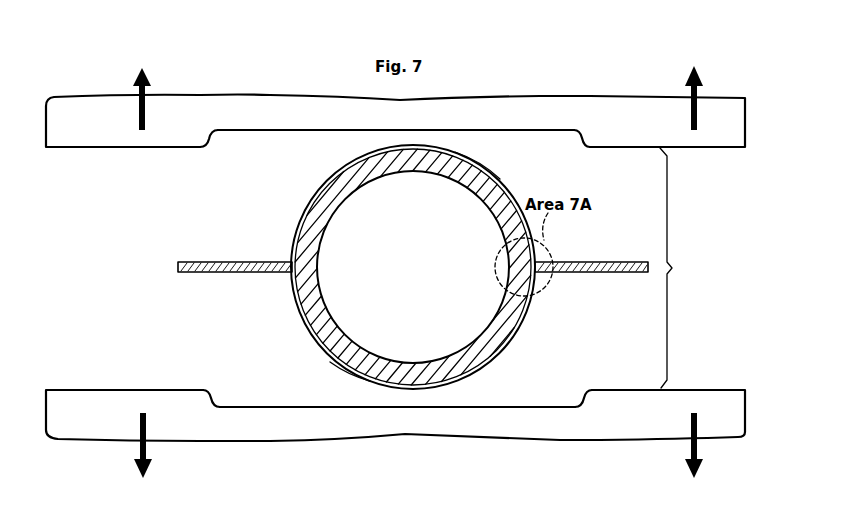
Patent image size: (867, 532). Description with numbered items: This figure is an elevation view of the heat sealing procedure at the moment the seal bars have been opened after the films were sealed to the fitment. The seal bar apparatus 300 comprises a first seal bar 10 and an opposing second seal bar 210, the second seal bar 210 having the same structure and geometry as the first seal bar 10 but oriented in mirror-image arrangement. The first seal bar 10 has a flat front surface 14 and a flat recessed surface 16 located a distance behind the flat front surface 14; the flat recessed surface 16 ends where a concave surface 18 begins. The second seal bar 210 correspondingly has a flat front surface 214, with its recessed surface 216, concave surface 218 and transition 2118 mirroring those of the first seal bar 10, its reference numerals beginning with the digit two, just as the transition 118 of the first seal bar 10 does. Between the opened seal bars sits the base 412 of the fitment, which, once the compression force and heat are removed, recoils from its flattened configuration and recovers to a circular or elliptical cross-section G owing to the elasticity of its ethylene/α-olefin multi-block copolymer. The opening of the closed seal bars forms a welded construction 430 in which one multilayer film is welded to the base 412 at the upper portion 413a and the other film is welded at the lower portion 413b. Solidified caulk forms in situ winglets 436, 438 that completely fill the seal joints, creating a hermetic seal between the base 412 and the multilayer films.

The first seal bar 10 is at (395, 130).
The flat front surface 14 is at (125, 150).
The flat recessed surface 16 is at (270, 132).
The concave surface 18 is at (585, 133).
The plate transition 118 is at (200, 126).
The second seal bar 210 is at (396, 414).
The flat front surface 214 is at (100, 388).
The second plate middle portion 216 is at (513, 405).
The second plate transition 218 is at (590, 395).
The second plate transition 2118 is at (207, 395).
The seal bar apparatus 300 is at (696, 54).
The base 412 is at (428, 272).
The upper portion 413a is at (495, 158).
The lower portion 413b is at (352, 380).
The welded construction 430 is at (672, 268).
The in situ winglet 436 is at (538, 263).
The in situ winglet 438 is at (292, 275).
The cross-section G is at (282, 340).